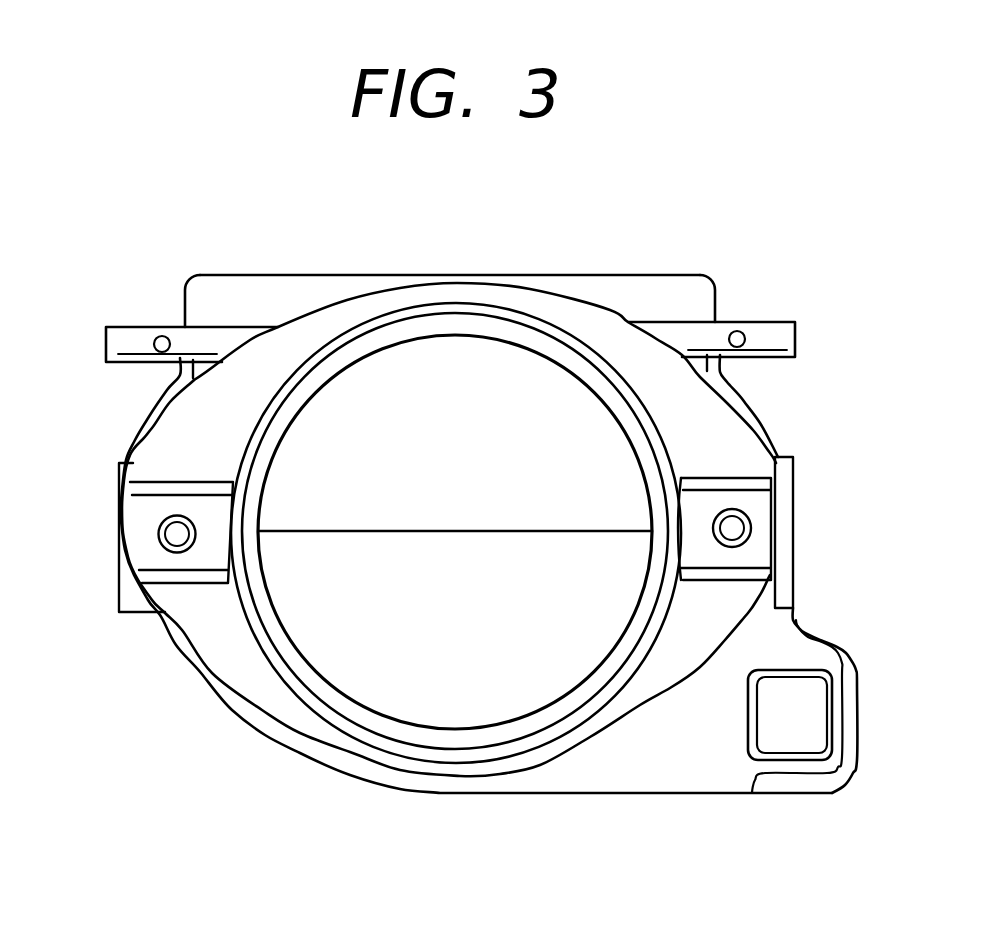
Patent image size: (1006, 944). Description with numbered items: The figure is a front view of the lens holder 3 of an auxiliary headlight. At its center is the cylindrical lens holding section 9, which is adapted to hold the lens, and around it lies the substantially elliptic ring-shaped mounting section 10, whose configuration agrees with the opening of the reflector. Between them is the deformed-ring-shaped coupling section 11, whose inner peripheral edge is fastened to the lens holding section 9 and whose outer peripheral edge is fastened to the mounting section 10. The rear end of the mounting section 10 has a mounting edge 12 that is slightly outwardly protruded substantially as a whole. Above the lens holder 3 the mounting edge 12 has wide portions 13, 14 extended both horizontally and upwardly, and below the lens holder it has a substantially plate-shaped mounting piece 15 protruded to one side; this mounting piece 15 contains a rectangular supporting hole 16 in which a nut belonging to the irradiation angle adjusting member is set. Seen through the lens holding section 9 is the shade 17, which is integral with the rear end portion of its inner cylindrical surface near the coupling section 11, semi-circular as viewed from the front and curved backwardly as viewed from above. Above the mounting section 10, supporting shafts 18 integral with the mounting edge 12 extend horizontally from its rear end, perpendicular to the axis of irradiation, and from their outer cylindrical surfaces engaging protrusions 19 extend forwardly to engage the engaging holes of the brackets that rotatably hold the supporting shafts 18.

The lens holder 3 is at (593, 267).
The lens holding section 9 is at (568, 740).
The mounting section 10 is at (521, 280).
The coupling section 11 is at (216, 646).
The mounting edge 12 is at (328, 760).
The wide portion 13 is at (210, 285).
The wide portion 14 is at (697, 282).
The mounting piece 15 is at (713, 772).
The supporting hole 16 is at (808, 682).
The shade 17 is at (471, 545).
The supporting shaft 18 is at (118, 337).
The engaging protrusion 19 is at (162, 336).